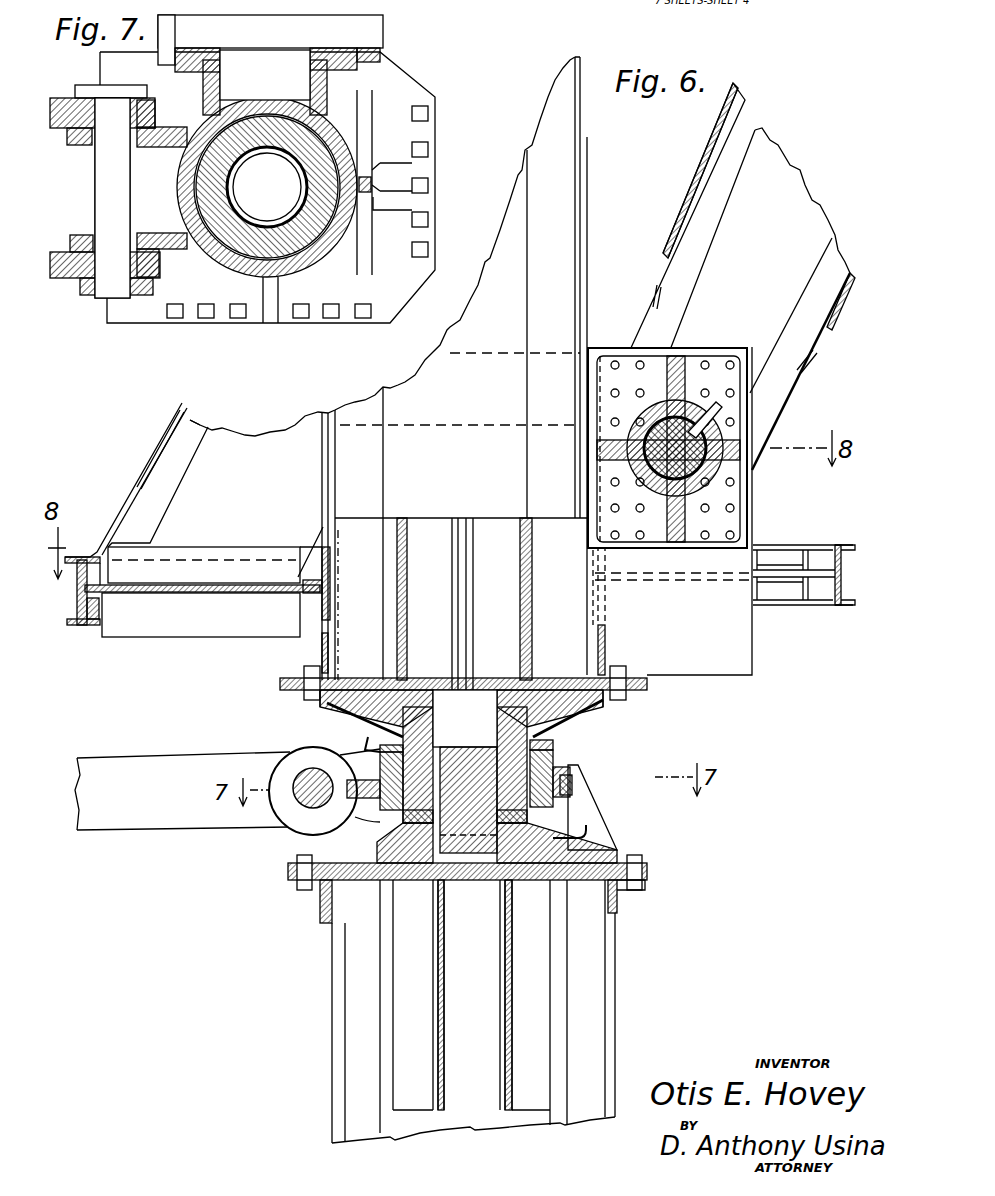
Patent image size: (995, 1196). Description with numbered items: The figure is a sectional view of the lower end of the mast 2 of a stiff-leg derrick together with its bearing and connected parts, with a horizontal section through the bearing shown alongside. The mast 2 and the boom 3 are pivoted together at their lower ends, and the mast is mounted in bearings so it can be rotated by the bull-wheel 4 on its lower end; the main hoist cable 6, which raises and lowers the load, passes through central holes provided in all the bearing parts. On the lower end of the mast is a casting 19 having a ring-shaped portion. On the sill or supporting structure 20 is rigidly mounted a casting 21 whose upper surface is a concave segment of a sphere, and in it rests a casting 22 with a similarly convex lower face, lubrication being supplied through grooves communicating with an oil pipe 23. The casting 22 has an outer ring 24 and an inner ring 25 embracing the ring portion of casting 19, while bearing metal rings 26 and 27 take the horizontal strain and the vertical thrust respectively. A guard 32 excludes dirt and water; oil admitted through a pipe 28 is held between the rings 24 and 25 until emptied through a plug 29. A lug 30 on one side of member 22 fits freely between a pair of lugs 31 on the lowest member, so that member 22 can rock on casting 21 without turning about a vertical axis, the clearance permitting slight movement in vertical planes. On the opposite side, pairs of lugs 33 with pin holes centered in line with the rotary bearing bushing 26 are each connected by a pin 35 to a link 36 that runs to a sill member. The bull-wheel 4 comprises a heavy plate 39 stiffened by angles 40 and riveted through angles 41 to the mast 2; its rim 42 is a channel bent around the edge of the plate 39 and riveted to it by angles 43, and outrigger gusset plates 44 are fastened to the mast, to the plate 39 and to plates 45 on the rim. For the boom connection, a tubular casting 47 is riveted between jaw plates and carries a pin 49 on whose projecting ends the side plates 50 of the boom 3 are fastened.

In FIG. 6, the mast 2 is at (565, 187).
In FIG. 6, the boom 3 is at (716, 174).
In FIG. 6, the bull-wheel 4 is at (204, 505).
In FIG. 6, the main hoist cable 6 is at (604, 416).
In FIG. 6, the casting with ring-shaped portion 19 is at (540, 728).
In FIG. 6, the sill or supporting structure 20 is at (613, 958).
In FIG. 7, the casting 21 is at (398, 298).
In FIG. 6, the casting 21 is at (530, 880).
In FIG. 7, the casting 22 is at (342, 130).
In FIG. 6, the casting 22 is at (497, 847).
In FIG. 6, the oil pipe 23 is at (588, 835).
In FIG. 7, the outer ring 24 is at (315, 250).
In FIG. 6, the outer ring 24 is at (555, 760).
In FIG. 7, the inner ring 25 is at (298, 176).
In FIG. 6, the inner ring 25 is at (497, 780).
In FIG. 6, the rotary bearing bushing 26 is at (570, 772).
In FIG. 6, the bearing metal ring 27 is at (497, 812).
In FIG. 6, the oil pipe 28 is at (333, 740).
In FIG. 6, the plug 29 is at (375, 822).
In FIG. 7, the lug 30 is at (366, 178).
In FIG. 6, the lug 30 is at (572, 787).
In FIG. 7, the lugs 31 is at (376, 205).
In FIG. 6, the lugs 31 is at (592, 808).
In FIG. 6, the guard 32 is at (553, 745).
In FIG. 7, the lugs 33 is at (312, 72).
In FIG. 6, the lugs 33 is at (313, 777).
In FIG. 7, the pin 35 is at (85, 197).
In FIG. 6, the pin 35 is at (305, 807).
In FIG. 7, the link 36 is at (63, 125).
In FIG. 6, the link 36 is at (120, 822).
In FIG. 6, the heavy plate 39 is at (210, 592).
In FIG. 6, the angles 40 is at (262, 622).
In FIG. 6, the angles 41 is at (318, 565).
In FIG. 6, the rim 42 is at (80, 595).
In FIG. 6, the angles 43 is at (92, 612).
In FIG. 6, the outrigger gusset plates 44 is at (230, 442).
In FIG. 6, the plates 45 is at (112, 523).
In FIG. 6, the tubular casting 47 is at (754, 473).
In FIG. 6, the pin 49 is at (718, 488).
In FIG. 6, the side plates 50 is at (782, 427).